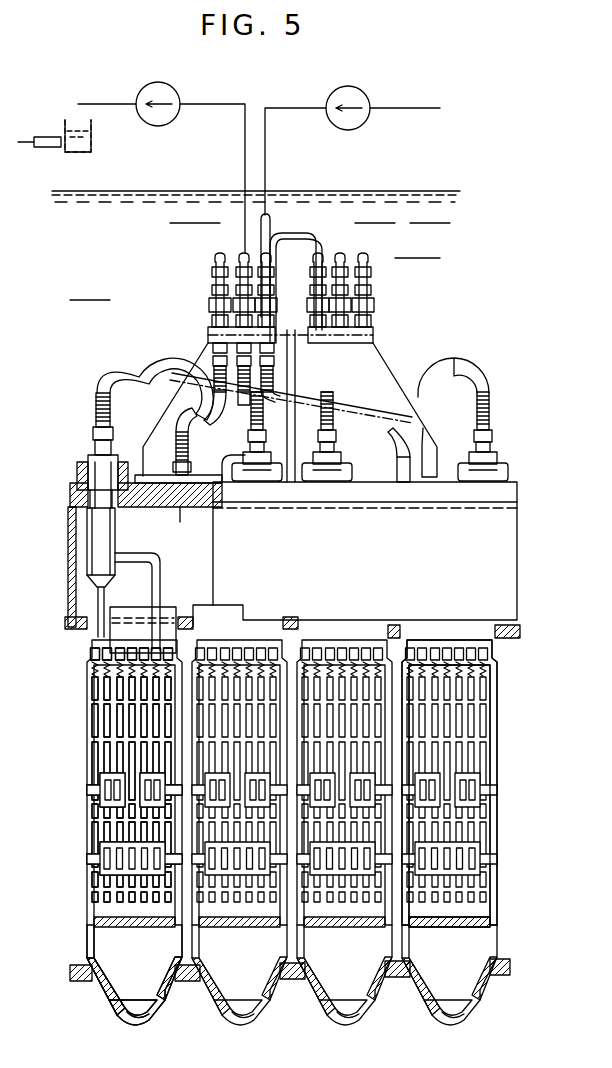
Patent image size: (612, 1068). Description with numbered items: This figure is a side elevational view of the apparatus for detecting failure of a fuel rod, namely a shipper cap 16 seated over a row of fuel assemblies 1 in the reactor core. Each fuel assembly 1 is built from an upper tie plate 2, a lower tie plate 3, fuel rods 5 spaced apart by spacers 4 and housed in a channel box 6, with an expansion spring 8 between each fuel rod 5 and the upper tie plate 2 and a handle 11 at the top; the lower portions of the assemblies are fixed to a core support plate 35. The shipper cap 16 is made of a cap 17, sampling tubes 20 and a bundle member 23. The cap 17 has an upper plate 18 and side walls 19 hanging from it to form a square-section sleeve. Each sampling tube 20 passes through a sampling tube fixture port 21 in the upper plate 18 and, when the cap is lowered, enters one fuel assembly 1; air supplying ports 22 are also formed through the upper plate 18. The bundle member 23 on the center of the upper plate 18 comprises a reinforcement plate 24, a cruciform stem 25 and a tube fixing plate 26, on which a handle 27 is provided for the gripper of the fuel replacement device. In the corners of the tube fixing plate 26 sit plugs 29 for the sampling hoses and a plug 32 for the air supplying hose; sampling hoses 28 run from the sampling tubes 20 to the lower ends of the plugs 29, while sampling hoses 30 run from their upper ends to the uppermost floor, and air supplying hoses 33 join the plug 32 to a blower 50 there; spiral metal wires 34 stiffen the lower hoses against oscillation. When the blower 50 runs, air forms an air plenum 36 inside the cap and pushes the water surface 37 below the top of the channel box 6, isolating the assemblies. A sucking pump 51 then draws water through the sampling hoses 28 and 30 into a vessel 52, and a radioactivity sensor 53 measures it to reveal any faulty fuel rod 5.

The fuel assembly 1 is at (80, 760).
The upper tie plate 2 is at (90, 652).
The lower tie plate 3 is at (101, 1004).
The spacers 4 is at (100, 855).
The fuel rods 5 is at (100, 808).
The channel box 6 is at (88, 690).
The expansion spring 8 is at (498, 672).
The handle 11 is at (135, 556).
The shipper cap 16 is at (486, 324).
The cap 17 is at (519, 523).
The upper plate 18 is at (70, 495).
The side walls 19 is at (518, 583).
The sampling tubes 20 is at (97, 548).
The sampling tube fixture port 21 is at (87, 462).
The air supplying ports 22 is at (187, 478).
The bundle member 23 is at (374, 462).
The reinforcement plate 24 is at (428, 480).
The stem 25 is at (386, 380).
The tube fixing plate 26 is at (374, 334).
The handle 27 is at (300, 234).
The sampling hoses 28 is at (97, 376).
The plugs for sampling hoses 29 is at (211, 320).
The sampling hoses 30 is at (222, 104).
The plug for air supplying hose 32 is at (284, 326).
The air supplying hoses 33 is at (292, 108).
The spiral metal wires 34 is at (491, 406).
The core support plate 35 is at (290, 983).
The air plenum 36 is at (214, 523).
The water surface 37 is at (140, 612).
The blower 50 is at (350, 86).
The sucking pump 51 is at (163, 76).
The vessel 52 is at (92, 143).
The radioactivity sensor 53 is at (47, 137).